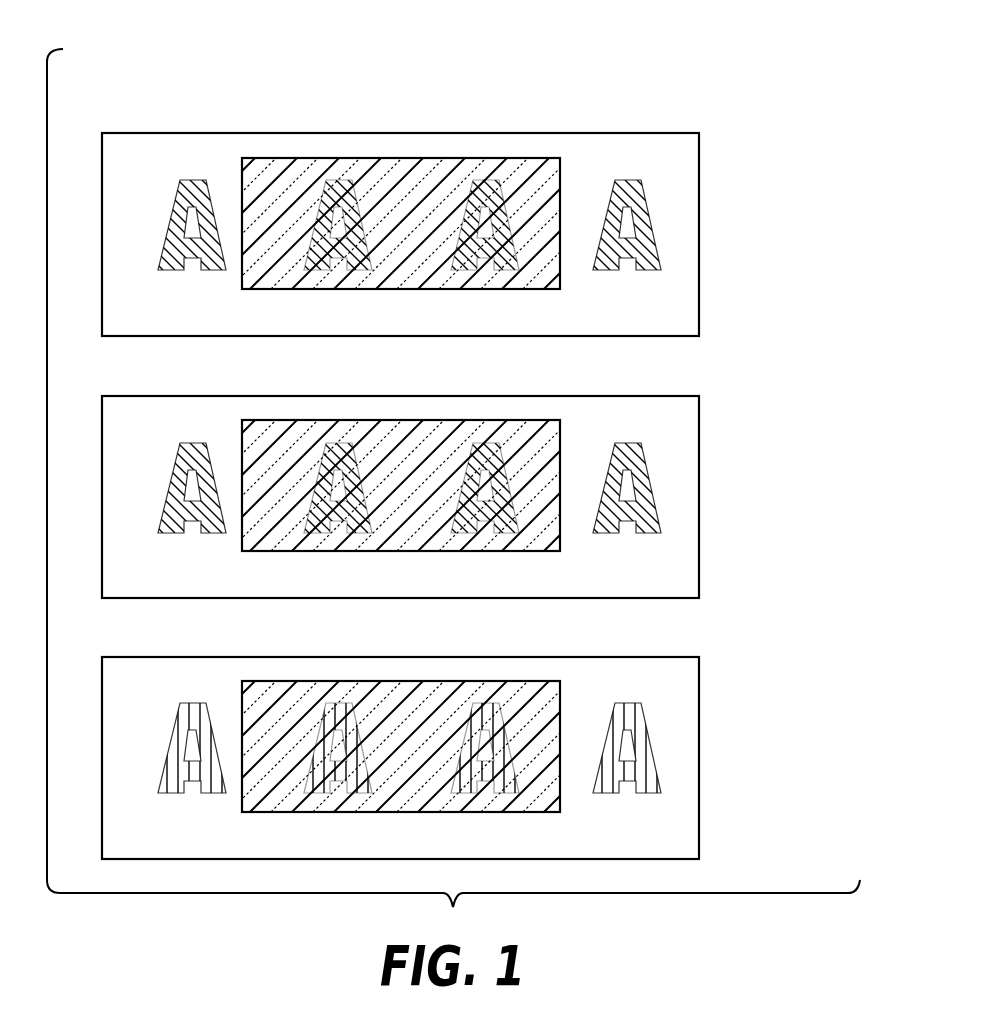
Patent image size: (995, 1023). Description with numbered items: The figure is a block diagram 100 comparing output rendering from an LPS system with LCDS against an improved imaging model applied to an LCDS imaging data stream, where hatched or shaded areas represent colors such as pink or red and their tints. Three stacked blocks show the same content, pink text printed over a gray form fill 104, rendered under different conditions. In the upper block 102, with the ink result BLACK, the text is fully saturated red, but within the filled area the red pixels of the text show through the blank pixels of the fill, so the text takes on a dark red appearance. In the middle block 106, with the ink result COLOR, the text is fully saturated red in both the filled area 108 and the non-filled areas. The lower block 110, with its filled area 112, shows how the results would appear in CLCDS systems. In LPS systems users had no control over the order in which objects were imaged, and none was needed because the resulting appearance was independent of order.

The block diagram 100 is at (695, 85).
The block 102 is at (700, 235).
The gray form fill 104 is at (388, 158).
The block 106 is at (700, 496).
The filled area 108 is at (388, 420).
The block 110 is at (700, 757).
The filled area 112 is at (388, 681).